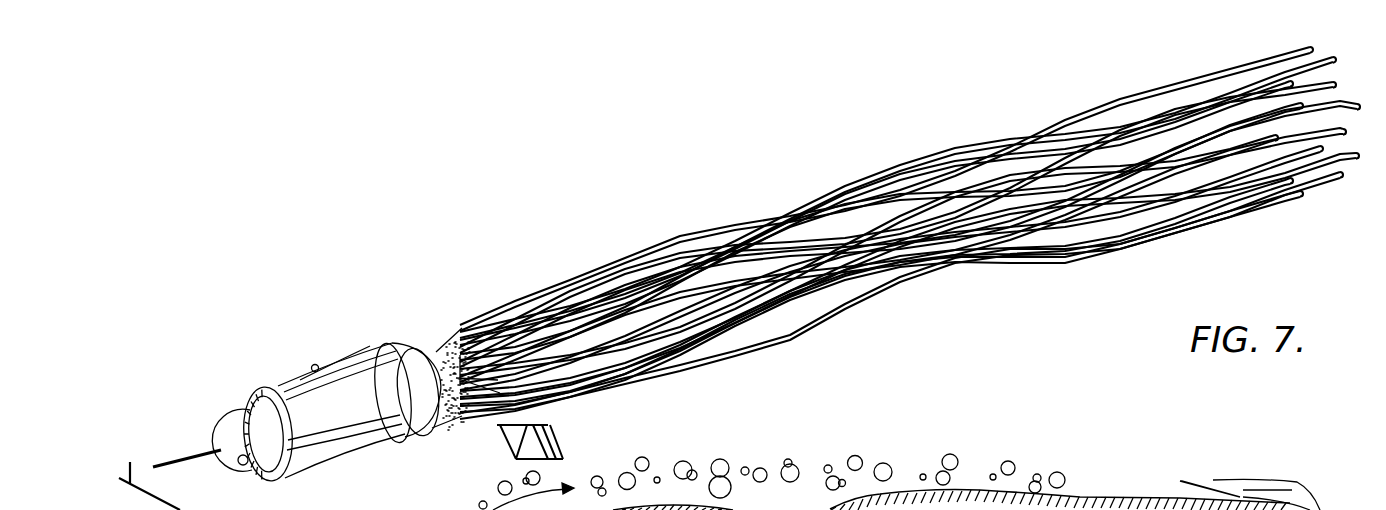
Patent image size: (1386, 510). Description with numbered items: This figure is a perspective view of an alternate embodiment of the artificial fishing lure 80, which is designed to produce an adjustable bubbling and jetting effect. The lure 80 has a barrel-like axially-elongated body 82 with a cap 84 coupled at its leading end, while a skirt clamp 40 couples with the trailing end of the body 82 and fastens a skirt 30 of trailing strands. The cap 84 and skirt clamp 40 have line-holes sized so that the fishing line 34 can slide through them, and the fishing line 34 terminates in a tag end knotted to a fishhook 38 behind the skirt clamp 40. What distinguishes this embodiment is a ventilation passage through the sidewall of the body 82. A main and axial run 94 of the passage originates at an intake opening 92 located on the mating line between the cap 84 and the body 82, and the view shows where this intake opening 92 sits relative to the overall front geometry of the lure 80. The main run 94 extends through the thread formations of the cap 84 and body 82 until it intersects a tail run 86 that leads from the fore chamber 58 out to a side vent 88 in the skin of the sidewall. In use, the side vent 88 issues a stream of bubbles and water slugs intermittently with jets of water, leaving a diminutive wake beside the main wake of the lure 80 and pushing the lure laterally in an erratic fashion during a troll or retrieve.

The skirt 30 is at (480, 317).
The fishing line 34 is at (183, 453).
The fishhook 38 is at (1210, 478).
The skirt clamp 40 is at (812, 509).
The fore chamber 58 is at (637, 509).
The lure 80 is at (268, 373).
The axially-elongated body 82 is at (360, 342).
The cap 84 is at (233, 423).
The tail run 86 is at (453, 509).
The side vent 88 is at (315, 366).
The intake opening 92 is at (250, 396).
The main and axial run 94 is at (303, 503).